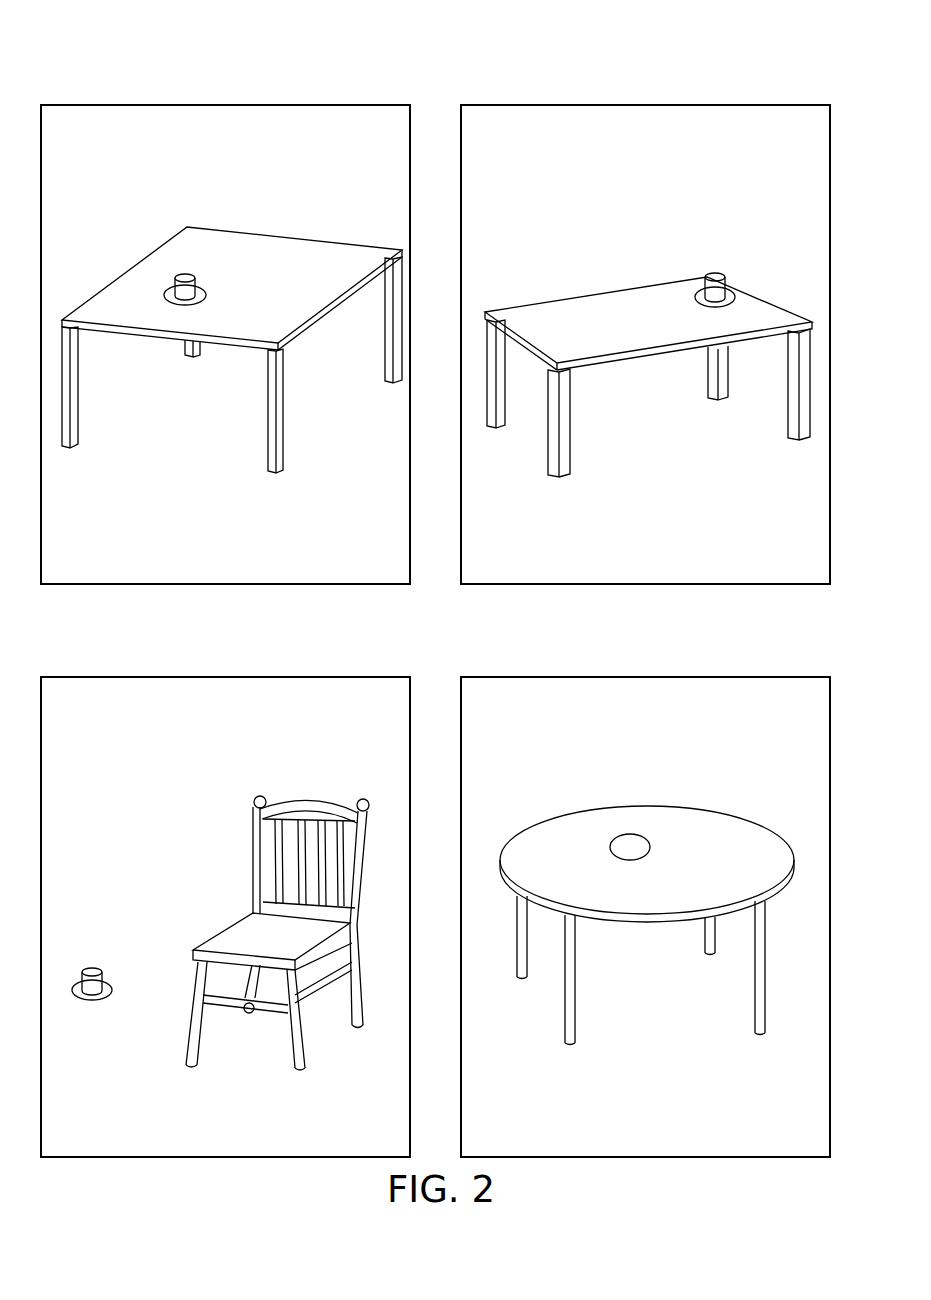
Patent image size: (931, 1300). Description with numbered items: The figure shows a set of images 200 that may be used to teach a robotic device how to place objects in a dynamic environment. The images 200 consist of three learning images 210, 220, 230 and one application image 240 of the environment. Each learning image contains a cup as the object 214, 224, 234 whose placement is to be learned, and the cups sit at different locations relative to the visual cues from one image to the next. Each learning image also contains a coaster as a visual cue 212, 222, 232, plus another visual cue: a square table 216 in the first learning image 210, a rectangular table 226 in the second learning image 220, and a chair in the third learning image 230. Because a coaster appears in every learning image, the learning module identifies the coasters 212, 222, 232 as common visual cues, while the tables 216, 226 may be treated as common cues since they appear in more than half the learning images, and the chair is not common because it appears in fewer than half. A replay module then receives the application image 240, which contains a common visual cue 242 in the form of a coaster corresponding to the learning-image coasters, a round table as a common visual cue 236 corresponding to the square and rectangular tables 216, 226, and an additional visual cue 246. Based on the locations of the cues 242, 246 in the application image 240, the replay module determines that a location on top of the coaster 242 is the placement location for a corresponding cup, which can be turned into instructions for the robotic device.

The images 200 is at (397, 46).
The learning image 210 is at (237, 105).
The visual cue 212 is at (206, 292).
The object 214 is at (196, 275).
The visual cue 216 is at (187, 227).
The learning image 220 is at (660, 105).
The visual cue 222 is at (734, 292).
The object 224 is at (727, 270).
The visual cue 226 is at (662, 282).
The learning image 230 is at (235, 677).
The visual cue 232 is at (114, 990).
The object 234 is at (104, 970).
The common visual cue 236 is at (247, 913).
The application image 240 is at (660, 677).
The common visual cue 242 is at (652, 847).
The additional visual cue 246 is at (638, 803).